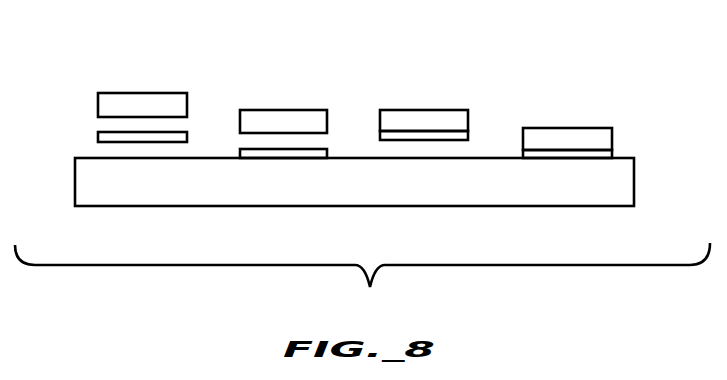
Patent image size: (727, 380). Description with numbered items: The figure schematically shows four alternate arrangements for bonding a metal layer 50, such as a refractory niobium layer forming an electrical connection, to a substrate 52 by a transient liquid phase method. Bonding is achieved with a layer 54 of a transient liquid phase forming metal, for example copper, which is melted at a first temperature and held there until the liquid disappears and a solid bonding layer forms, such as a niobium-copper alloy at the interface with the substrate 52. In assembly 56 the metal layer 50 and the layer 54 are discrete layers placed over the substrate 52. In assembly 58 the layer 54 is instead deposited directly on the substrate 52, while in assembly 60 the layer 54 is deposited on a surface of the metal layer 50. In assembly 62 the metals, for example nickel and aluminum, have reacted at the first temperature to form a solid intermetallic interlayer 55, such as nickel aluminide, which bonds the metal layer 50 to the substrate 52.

The metal layer 50 is at (162, 92).
The substrate 52 is at (622, 187).
The layer of transient liquid phase forming metal 54 is at (137, 137).
The intermetallic interlayer 55 is at (610, 152).
The assembly 56 is at (130, 80).
The assembly 58 is at (270, 101).
The assembly 60 is at (418, 101).
The assembly 62 is at (564, 114).